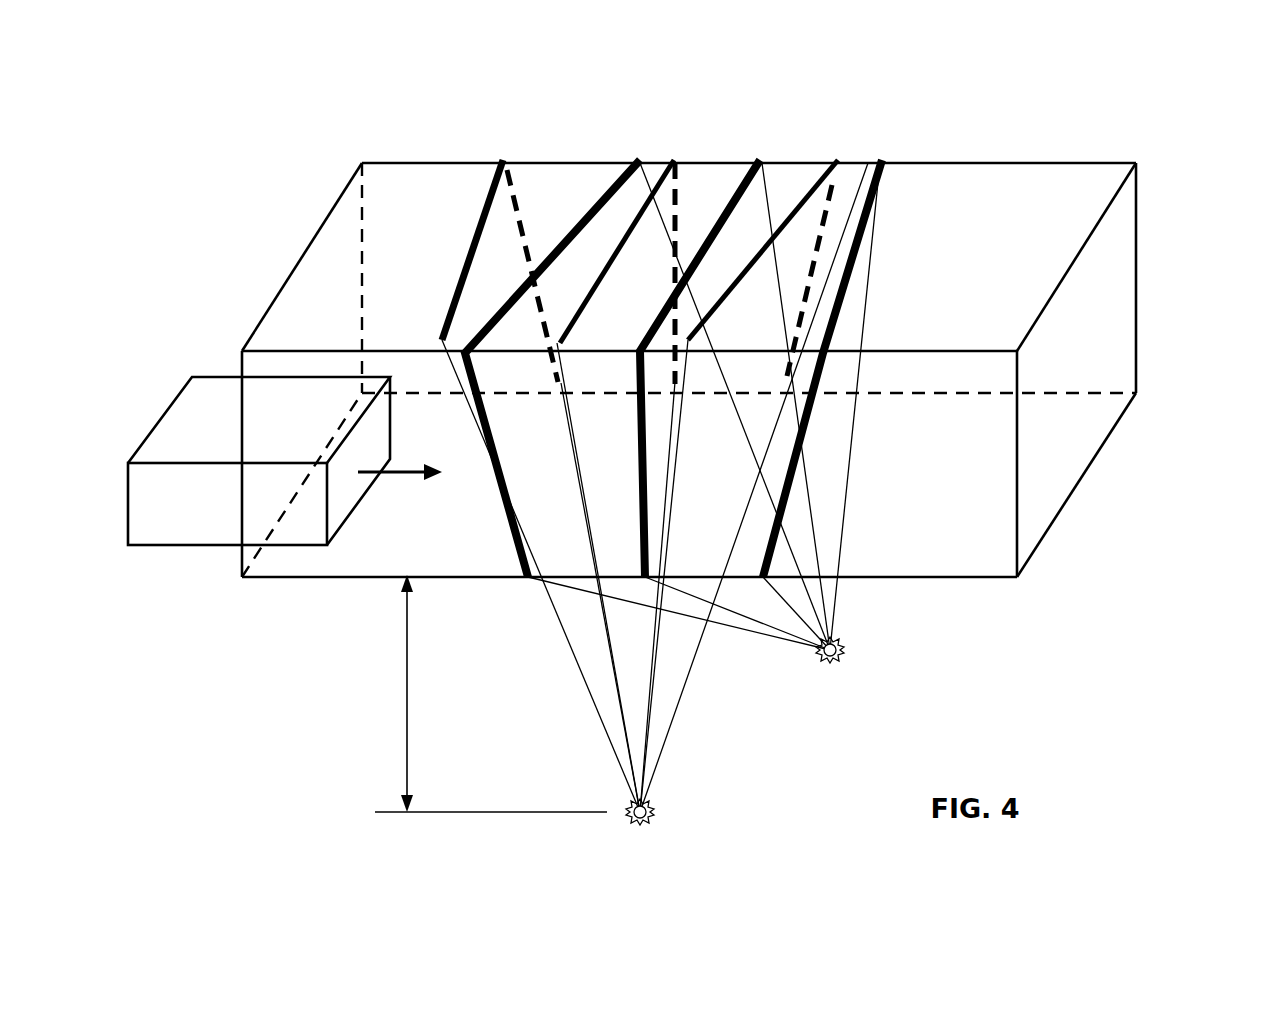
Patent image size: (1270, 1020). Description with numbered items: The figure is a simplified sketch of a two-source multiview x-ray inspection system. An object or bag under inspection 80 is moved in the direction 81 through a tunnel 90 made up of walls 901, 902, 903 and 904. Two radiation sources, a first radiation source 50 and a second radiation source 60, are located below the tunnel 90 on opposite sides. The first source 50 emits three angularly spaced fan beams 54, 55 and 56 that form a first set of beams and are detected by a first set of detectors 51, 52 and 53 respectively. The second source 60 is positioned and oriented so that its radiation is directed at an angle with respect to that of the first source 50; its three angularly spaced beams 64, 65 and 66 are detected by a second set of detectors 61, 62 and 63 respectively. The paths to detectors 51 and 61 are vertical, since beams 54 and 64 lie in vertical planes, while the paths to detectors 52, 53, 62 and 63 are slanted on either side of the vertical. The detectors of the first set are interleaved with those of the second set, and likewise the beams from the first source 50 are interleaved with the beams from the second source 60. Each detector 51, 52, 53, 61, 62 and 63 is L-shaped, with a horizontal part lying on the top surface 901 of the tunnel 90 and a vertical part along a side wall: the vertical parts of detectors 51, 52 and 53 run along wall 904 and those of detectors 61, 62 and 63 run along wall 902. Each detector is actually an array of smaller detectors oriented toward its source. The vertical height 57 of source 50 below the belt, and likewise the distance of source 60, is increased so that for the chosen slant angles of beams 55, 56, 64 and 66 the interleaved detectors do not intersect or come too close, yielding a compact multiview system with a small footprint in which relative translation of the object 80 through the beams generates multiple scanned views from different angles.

The tunnel 90 is at (722, 368).
The top surface 901 is at (935, 192).
The vertical wall 902 is at (1105, 272).
The wall 903 is at (1033, 437).
The vertical wall 904 is at (960, 540).
The object 80 is at (208, 522).
The direction 81 is at (390, 480).
The detector 52 is at (517, 207).
The detector 62 is at (605, 182).
The detector 51 is at (676, 205).
The detector 61 is at (738, 183).
The detector 53 is at (808, 180).
The detector 63 is at (865, 183).
The first radiation source 50 is at (632, 828).
The second radiation source 60 is at (845, 677).
The radiation beam 54 is at (628, 697).
The radiation beam 55 is at (582, 657).
The radiation beam 56 is at (668, 713).
The radiation beam 64 is at (770, 610).
The radiation beam 65 is at (723, 610).
The radiation beam 66 is at (835, 584).
The vertical height 57 is at (398, 683).